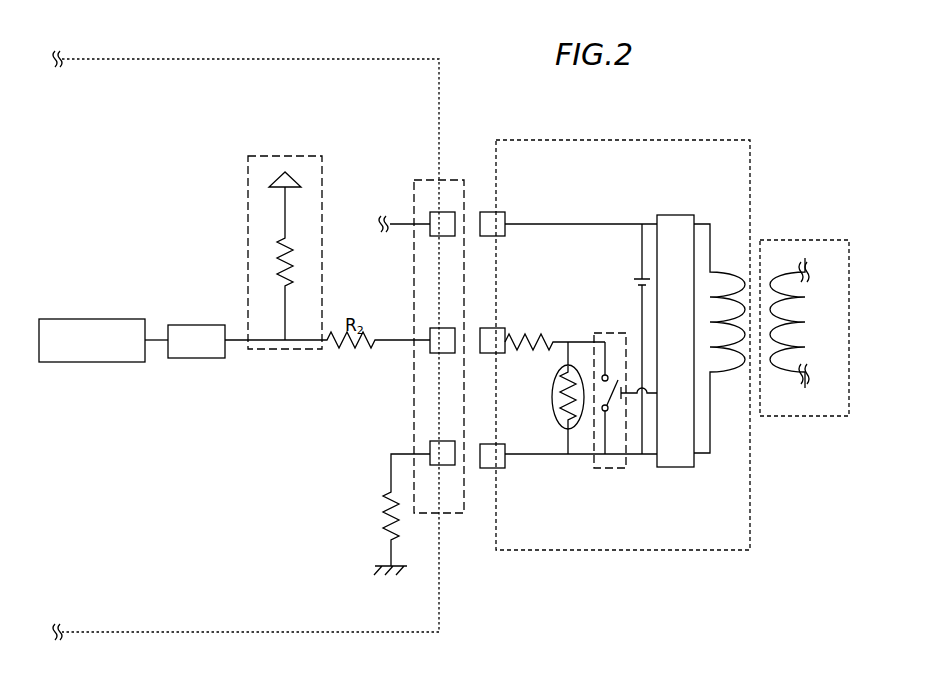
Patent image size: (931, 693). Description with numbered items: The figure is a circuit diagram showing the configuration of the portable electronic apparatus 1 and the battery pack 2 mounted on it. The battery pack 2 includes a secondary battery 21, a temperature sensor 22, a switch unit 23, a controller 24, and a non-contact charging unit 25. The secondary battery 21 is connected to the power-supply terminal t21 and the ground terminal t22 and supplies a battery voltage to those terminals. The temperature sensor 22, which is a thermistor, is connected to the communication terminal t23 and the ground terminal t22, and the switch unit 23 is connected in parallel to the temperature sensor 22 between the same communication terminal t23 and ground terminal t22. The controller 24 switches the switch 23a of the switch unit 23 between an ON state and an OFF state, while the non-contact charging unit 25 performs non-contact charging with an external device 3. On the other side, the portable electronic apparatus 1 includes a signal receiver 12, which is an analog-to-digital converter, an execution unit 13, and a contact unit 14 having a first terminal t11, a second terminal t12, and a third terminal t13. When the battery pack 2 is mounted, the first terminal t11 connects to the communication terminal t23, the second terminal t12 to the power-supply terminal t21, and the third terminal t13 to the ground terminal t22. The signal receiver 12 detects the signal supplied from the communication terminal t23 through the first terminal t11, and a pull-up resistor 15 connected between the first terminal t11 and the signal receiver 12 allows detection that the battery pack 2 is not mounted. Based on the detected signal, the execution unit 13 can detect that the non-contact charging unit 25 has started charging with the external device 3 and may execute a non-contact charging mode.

The portable electronic apparatus 1 is at (425, 58).
The battery pack 2 is at (708, 140).
The external device 3 is at (779, 240).
The signal receiver 12 is at (206, 325).
The execution unit 13 is at (128, 319).
The contact unit 14 is at (418, 180).
The pull-up resistor 15 is at (297, 156).
The secondary battery 21 is at (636, 281).
The temperature sensor 22 is at (561, 430).
The switch unit 23 is at (644, 400).
The switch 23a is at (613, 402).
The controller 24 is at (678, 226).
The non-contact charging unit 25 is at (722, 240).
The first terminal t11 is at (438, 346).
The second terminal t12 is at (447, 218).
The third terminal t13 is at (448, 457).
The power-supply terminal t21 is at (505, 219).
The ground terminal t22 is at (505, 447).
The communication terminal t23 is at (505, 333).